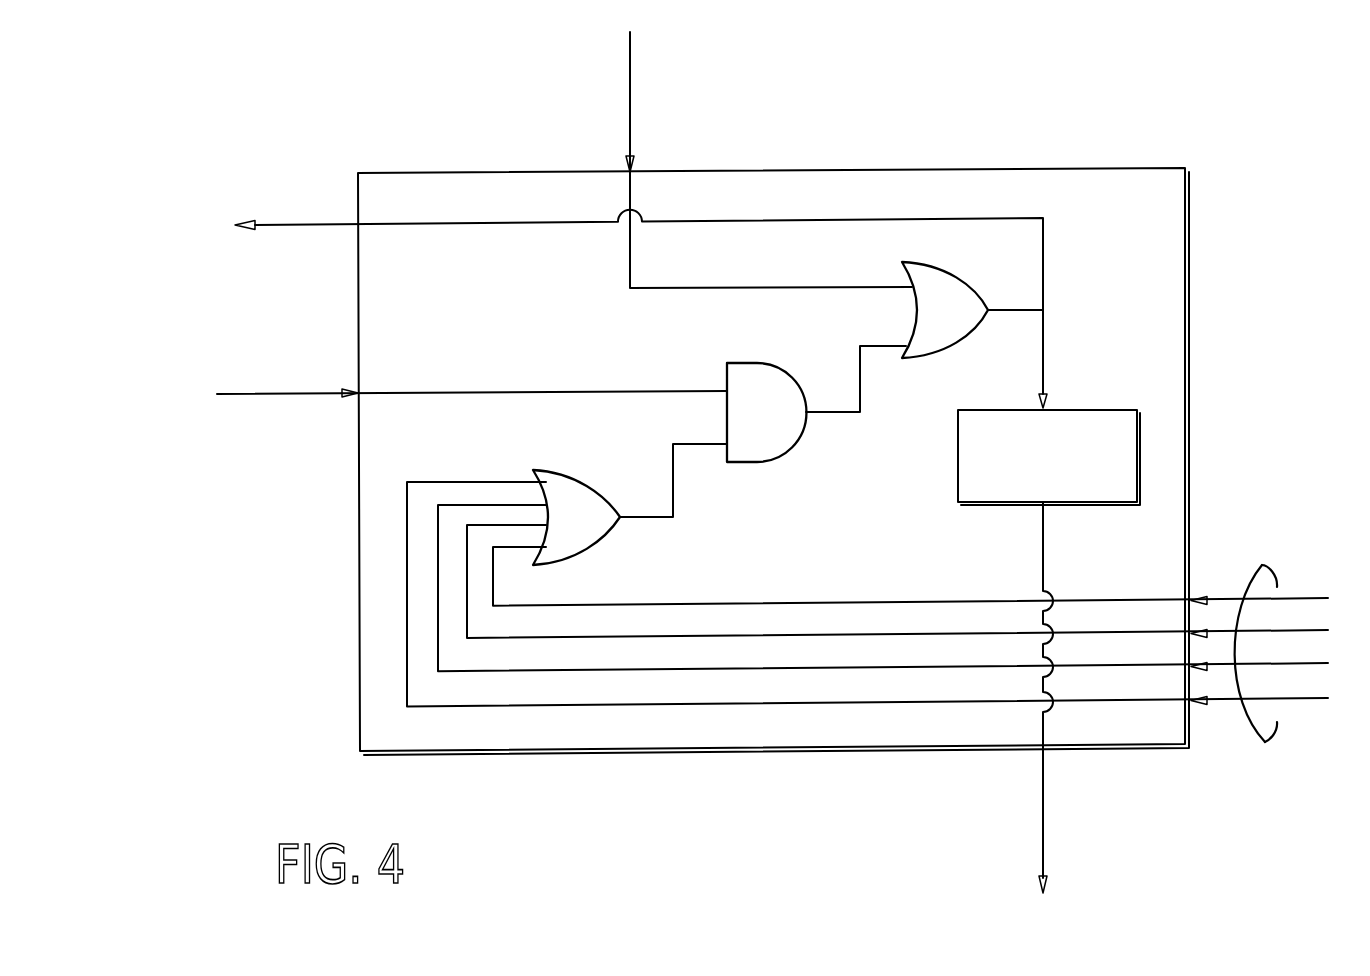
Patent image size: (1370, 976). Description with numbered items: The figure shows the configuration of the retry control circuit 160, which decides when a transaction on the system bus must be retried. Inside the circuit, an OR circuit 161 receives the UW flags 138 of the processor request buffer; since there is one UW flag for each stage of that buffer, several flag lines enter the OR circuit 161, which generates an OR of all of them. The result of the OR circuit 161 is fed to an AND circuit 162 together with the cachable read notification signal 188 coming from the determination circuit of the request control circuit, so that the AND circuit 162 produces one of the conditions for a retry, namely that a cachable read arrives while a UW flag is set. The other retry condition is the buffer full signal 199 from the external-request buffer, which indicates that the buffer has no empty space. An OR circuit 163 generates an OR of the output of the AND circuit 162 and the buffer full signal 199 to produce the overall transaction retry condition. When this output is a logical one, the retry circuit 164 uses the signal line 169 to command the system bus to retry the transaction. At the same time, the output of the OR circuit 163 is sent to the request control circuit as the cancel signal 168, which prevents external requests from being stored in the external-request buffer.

The UW flags 138 is at (1262, 565).
The retry control circuit 160 is at (1122, 168).
The OR circuit 161 is at (578, 481).
The AND circuit 162 is at (760, 364).
The OR circuit 163 is at (935, 354).
The retry circuit 164 is at (1085, 410).
The cancel signal 168 is at (283, 225).
The signal line 169 is at (1042, 798).
The cachable read notification signal 188 is at (268, 396).
The buffer full signal 199 is at (630, 93).